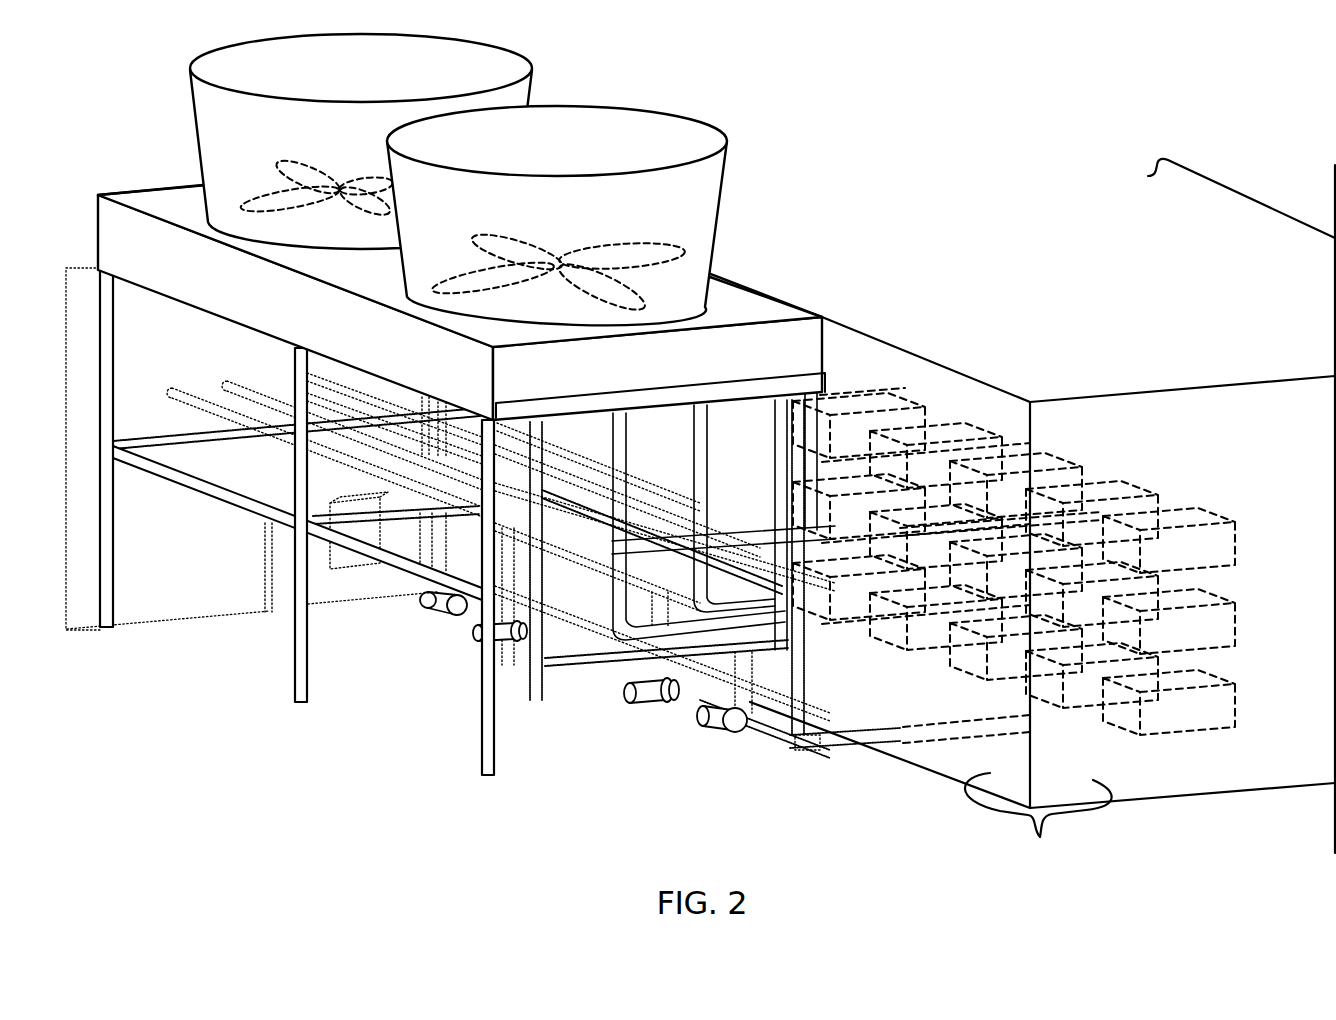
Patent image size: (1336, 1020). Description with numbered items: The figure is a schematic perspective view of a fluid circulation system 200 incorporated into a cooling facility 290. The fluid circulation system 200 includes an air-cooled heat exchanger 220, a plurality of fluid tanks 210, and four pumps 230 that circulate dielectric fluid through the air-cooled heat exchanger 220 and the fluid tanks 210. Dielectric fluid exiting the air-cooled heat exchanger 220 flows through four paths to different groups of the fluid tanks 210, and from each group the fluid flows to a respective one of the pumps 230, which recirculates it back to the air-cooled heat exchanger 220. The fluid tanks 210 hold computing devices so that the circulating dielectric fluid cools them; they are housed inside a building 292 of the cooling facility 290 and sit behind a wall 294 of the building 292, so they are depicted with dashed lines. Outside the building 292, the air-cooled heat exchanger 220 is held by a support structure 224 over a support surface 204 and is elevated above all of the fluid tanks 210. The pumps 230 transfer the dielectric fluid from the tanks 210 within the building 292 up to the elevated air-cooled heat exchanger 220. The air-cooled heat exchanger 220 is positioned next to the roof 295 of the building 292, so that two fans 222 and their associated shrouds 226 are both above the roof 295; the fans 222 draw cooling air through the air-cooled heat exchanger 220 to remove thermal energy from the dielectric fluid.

The fluid circulation system 200 is at (566, 724).
The support surface 204 is at (280, 521).
The fluid tanks 210 is at (1256, 611).
The air-cooled heat exchanger 220 is at (314, 336).
The fans 222 is at (360, 169).
The support structure 224 is at (180, 491).
The shrouds 226 is at (460, 179).
The pumps 230 is at (517, 642).
The cooling facility 290 is at (843, 136).
The building 292 is at (1160, 380).
The wall 294 is at (1150, 819).
The roof 295 is at (873, 338).